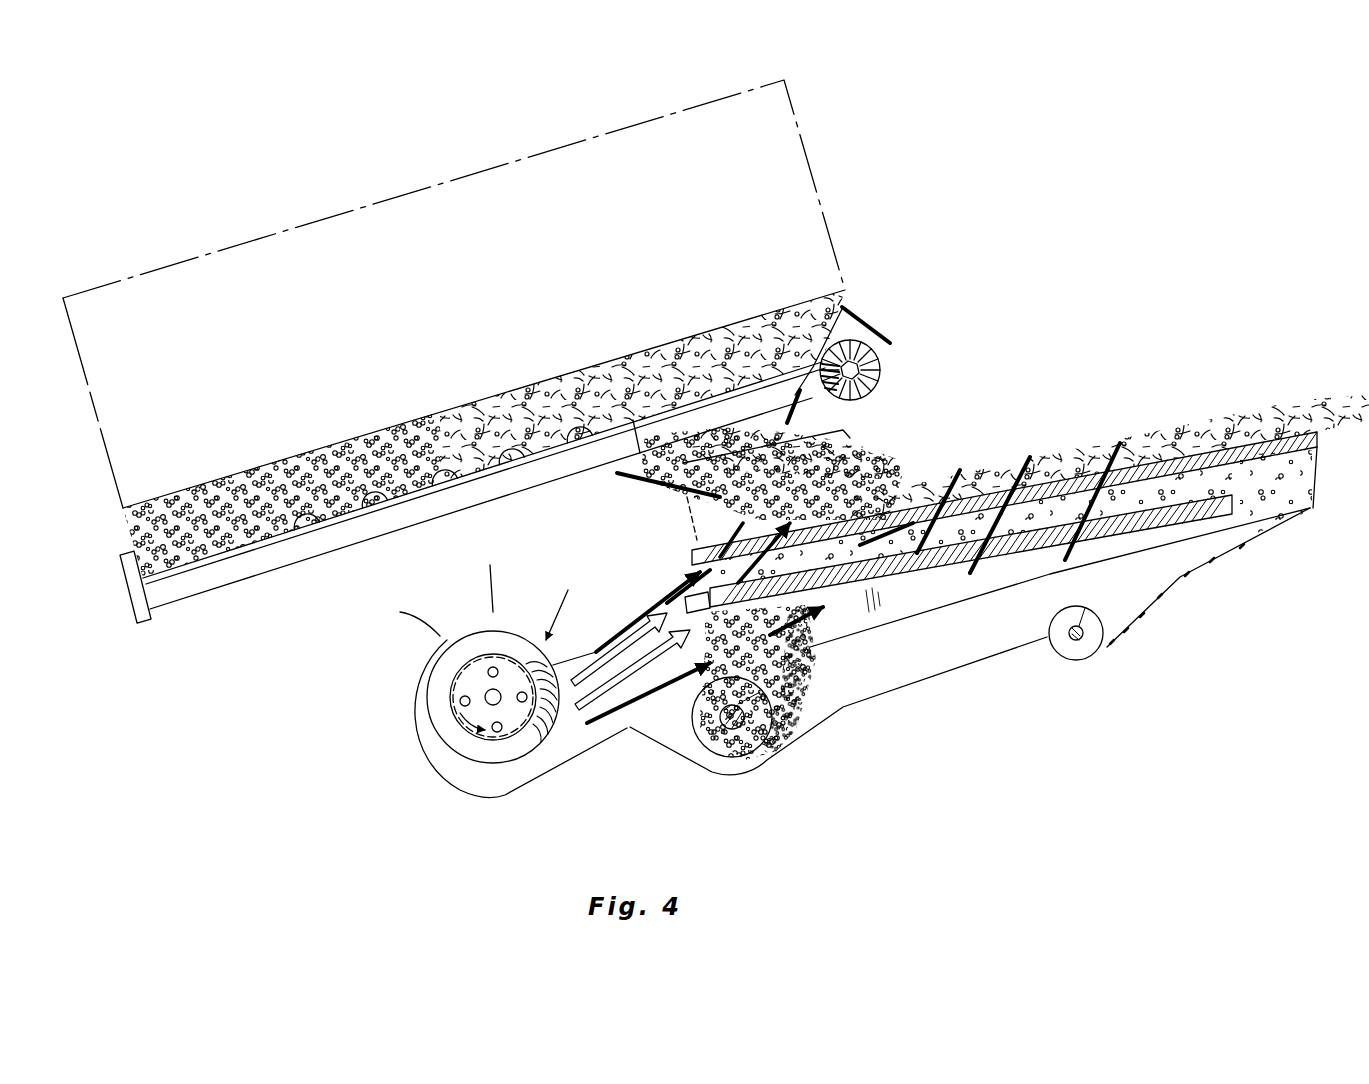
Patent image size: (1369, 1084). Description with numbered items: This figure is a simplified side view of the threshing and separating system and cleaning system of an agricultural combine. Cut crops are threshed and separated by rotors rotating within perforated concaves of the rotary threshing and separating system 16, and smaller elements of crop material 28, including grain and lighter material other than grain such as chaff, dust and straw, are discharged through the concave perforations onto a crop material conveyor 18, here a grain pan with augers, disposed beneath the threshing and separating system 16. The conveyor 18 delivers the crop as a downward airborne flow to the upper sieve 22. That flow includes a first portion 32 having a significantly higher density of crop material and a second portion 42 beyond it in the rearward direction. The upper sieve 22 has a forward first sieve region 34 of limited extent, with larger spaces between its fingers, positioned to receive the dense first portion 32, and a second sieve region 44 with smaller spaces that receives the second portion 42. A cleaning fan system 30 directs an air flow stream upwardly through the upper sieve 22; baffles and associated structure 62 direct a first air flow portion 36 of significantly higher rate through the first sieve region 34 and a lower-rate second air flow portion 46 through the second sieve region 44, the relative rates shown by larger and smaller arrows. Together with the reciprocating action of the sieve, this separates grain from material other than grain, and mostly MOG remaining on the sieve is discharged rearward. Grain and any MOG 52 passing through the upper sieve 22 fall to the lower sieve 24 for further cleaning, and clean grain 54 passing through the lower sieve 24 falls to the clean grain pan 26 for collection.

The rotary threshing and separating system 16 is at (282, 230).
The crop material conveyor 18 is at (550, 458).
The upper sieve 22 is at (1303, 450).
The lower sieve 24 is at (1170, 528).
The clean grain pan 26 is at (757, 773).
The smaller elements of crop material 28 is at (778, 347).
The cleaning fan system 30 is at (500, 757).
The first portion of the flow of crop material 32 is at (860, 437).
The first sieve region 34 is at (757, 447).
The first air flow portion 36 is at (677, 567).
The second portion of the flow of crop material 42 is at (1173, 430).
The second sieve region 44 is at (1053, 443).
The second air flow portion 46 is at (1000, 572).
The grain and MOG passing through upper sieve 52 is at (858, 580).
The clean grain 54 is at (843, 710).
The baffles and associated structure 62 is at (632, 705).